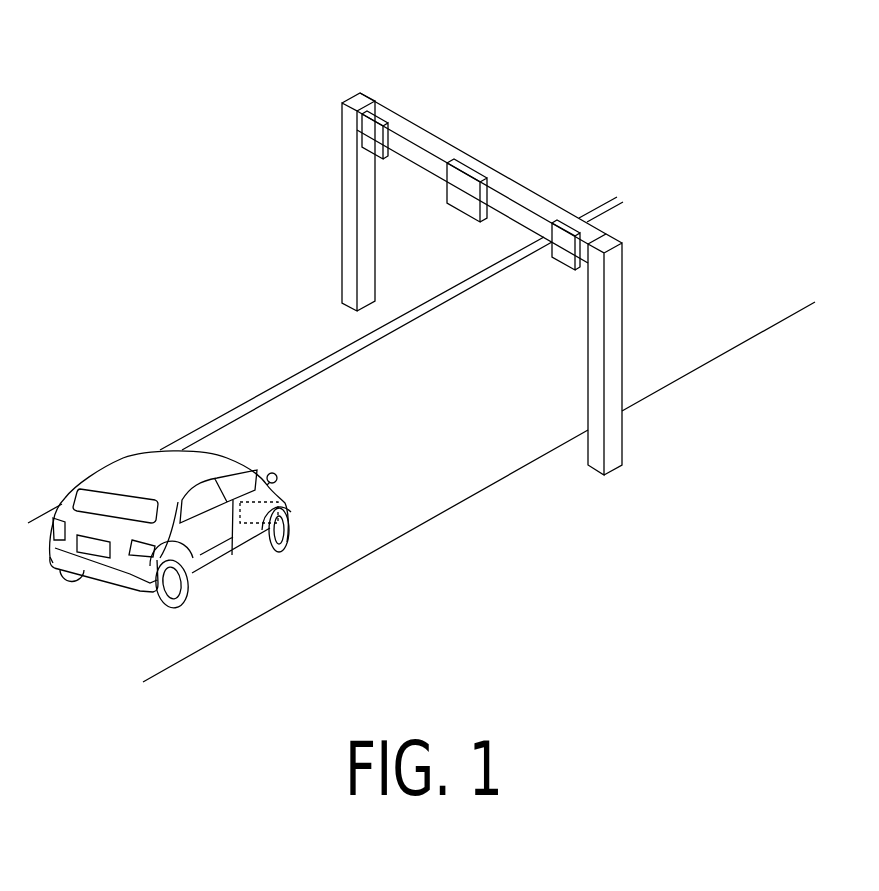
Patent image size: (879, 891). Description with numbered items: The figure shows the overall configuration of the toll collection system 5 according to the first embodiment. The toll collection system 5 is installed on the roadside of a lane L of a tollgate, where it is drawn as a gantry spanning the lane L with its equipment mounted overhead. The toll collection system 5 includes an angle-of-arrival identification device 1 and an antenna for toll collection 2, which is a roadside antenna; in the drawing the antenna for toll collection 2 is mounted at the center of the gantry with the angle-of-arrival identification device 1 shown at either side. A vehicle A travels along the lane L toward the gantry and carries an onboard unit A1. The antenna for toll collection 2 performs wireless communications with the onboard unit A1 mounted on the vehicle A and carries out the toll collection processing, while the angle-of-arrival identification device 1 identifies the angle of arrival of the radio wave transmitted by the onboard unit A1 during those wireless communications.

The toll collection system 5 is at (260, 83).
The angle-of-arrival identification device 1 is at (373, 114).
The antenna for toll collection 2 is at (467, 168).
The lane L is at (703, 268).
The vehicle A is at (145, 476).
The onboard unit A1 is at (258, 528).